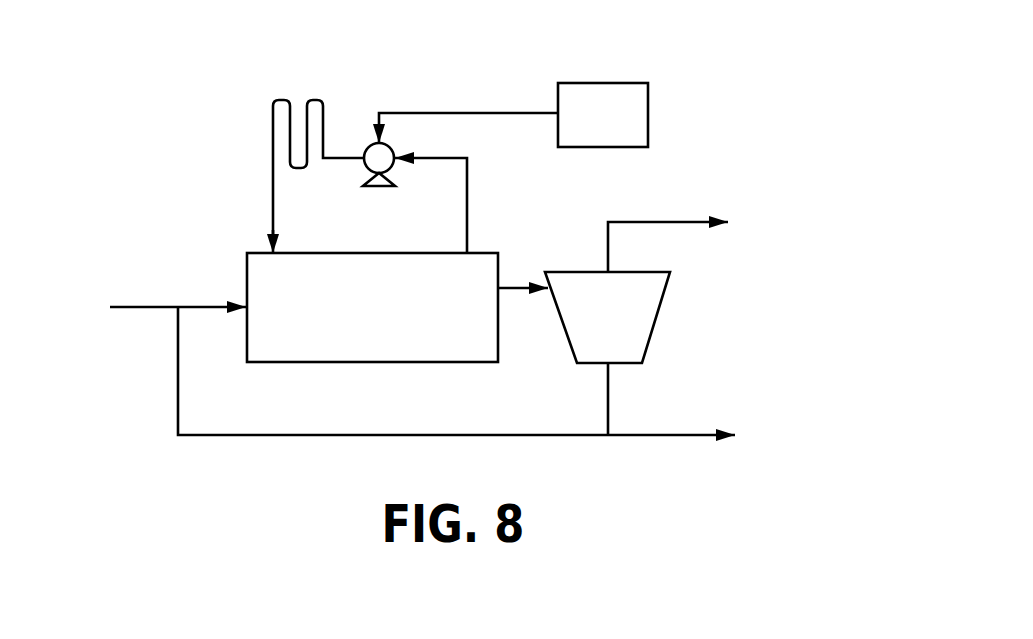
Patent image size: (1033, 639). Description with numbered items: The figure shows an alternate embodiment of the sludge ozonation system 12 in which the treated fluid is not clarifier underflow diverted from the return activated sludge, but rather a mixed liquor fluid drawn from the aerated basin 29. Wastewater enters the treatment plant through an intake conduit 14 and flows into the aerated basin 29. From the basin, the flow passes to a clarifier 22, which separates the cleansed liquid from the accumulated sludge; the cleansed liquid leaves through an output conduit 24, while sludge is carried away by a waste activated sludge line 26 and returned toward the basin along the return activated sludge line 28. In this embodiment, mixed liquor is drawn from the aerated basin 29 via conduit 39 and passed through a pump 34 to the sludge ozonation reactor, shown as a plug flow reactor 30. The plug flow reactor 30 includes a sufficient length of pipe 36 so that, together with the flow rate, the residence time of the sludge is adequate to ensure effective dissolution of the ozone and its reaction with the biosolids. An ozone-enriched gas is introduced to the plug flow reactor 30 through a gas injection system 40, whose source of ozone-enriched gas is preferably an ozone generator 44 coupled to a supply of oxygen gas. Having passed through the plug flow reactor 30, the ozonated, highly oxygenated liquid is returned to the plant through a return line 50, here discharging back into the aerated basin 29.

The sludge ozonation system 12 is at (197, 95).
The intake conduit 14 is at (133, 307).
The clarifier 22 is at (645, 315).
The output conduit 24 is at (667, 222).
The waste activated sludge line 26 is at (672, 435).
The return activated sludge line 28 is at (453, 435).
The aerated basin 29 is at (342, 353).
The plug flow reactor 30 is at (207, 182).
The pump 34 is at (387, 186).
The pipe 36 is at (323, 104).
The conduit 39 is at (467, 207).
The gas injection system 40 is at (475, 53).
The ozone generator 44 is at (640, 113).
The return line 50 is at (273, 215).